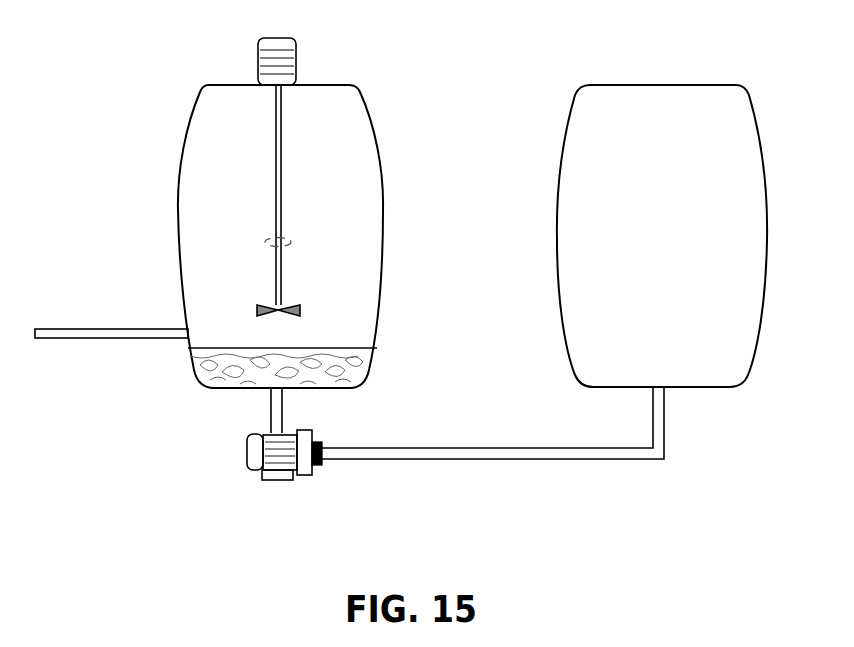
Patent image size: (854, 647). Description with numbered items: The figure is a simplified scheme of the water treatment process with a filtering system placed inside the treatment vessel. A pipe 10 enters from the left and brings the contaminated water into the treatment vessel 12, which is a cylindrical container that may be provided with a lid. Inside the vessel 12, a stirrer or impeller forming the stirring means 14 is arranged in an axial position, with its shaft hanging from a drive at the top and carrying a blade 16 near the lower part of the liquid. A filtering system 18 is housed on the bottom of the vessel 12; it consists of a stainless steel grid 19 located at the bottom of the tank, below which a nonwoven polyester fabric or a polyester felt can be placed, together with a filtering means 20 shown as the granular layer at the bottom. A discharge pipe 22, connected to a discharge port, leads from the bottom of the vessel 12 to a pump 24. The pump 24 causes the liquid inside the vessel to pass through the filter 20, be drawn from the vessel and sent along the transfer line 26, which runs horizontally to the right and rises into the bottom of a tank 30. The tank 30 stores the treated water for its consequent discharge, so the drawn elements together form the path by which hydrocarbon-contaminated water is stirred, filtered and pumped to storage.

The pipe 10 is at (82, 338).
The treatment vessel 12 is at (383, 198).
The stirring means 14 is at (282, 130).
The blade 16 is at (257, 310).
The filtering system 18 is at (190, 370).
The stainless steel grid 19 is at (358, 352).
The filtering means 20 is at (355, 380).
The discharge pipe 22 is at (280, 410).
The pump 24 is at (290, 465).
The transfer line 26 is at (493, 452).
The tank 30 is at (737, 357).